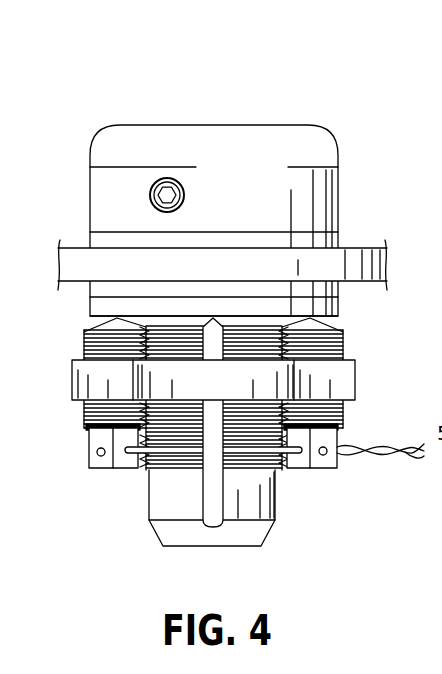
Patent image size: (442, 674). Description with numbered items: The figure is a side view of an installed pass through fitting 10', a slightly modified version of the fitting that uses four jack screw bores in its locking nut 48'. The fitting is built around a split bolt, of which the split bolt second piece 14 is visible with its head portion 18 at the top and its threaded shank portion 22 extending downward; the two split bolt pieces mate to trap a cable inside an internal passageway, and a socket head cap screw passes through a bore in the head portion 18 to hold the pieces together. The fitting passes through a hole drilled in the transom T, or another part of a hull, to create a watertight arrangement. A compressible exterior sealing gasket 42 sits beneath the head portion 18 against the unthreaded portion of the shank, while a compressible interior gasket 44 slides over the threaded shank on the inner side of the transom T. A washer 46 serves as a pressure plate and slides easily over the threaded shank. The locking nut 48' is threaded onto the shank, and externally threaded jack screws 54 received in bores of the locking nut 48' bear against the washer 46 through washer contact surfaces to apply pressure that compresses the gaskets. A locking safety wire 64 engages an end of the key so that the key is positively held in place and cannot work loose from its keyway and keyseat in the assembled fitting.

The pass through fitting 10' is at (218, 282).
The split bolt second piece 14 is at (303, 124).
The head portion 18 is at (257, 187).
The compressible exterior sealing gasket 42 is at (90, 242).
The transom T is at (383, 245).
The compressible interior gasket 44 is at (90, 288).
The washer 46 is at (90, 307).
The jack screws 54 is at (345, 343).
The locking nut 48' is at (245, 380).
The threaded shank portion 22 is at (148, 470).
The locking safety wire 64 is at (383, 445).